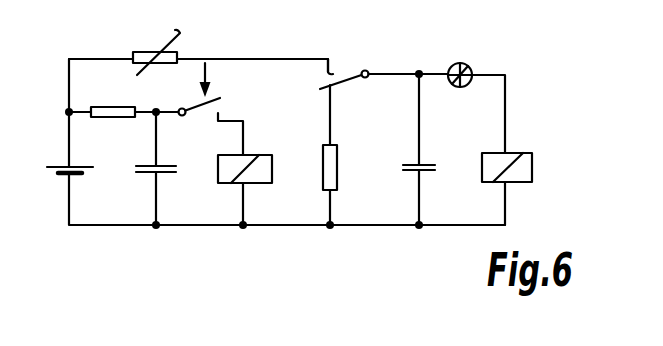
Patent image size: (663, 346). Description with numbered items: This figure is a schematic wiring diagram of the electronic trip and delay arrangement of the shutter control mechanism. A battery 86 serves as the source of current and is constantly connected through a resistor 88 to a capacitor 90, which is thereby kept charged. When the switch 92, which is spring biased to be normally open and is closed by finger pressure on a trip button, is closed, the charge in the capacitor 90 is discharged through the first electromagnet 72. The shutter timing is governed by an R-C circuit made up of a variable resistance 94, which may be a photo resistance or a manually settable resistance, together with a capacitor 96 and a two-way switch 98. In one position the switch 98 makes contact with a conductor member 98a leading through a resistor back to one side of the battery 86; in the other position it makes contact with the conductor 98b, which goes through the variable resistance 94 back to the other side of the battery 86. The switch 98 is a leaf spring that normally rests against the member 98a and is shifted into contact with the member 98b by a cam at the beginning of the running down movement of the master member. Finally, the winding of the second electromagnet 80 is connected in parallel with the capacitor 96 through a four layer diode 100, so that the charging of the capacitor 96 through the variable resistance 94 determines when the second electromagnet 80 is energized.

The variable resistance 94 is at (142, 52).
The resistor 88 is at (104, 109).
The switch 92 is at (220, 98).
The battery 86 is at (55, 173).
The capacitor 90 is at (149, 170).
The first electromagnet 72 is at (218, 177).
The conductor 98b is at (332, 72).
The two-way switch 98 is at (346, 82).
The conductor member 98a is at (328, 106).
The four layer diode 100 is at (470, 63).
The capacitor 96 is at (426, 165).
The second electromagnet 80 is at (533, 167).